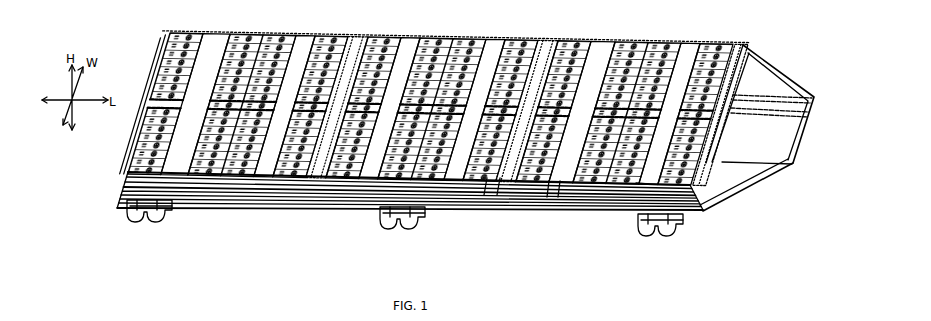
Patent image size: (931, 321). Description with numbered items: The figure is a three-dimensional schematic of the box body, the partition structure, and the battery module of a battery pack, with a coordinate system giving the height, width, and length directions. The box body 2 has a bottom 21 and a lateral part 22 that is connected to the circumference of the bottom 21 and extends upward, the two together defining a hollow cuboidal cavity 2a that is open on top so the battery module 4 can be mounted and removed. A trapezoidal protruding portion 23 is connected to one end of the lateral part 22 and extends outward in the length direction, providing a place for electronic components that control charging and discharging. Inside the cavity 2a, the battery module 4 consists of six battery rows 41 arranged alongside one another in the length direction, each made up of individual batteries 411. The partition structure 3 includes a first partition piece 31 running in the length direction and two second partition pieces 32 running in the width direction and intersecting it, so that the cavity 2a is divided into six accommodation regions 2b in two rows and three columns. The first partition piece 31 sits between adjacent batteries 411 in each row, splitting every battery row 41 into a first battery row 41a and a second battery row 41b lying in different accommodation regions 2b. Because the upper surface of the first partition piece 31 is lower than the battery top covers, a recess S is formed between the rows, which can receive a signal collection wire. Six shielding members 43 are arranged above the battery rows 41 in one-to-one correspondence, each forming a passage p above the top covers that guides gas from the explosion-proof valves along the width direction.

The battery row 41 is at (230, 93).
The first battery row 41a is at (172, 66).
The second battery row 41b is at (140, 148).
The shielding member 43 is at (222, 31).
The second partition piece 32 is at (357, 31).
The recess S is at (431, 95).
The partition structure 3 is at (567, 114).
The first partition piece 31 is at (723, 117).
The protruding portion 23 is at (733, 204).
The passage p is at (642, 183).
The box body 2 is at (410, 208).
The cavity 2a is at (486, 194).
The accommodation region 2b is at (548, 196).
The lateral part 22 is at (341, 207).
The battery module 4 is at (440, 210).
The battery 411 is at (233, 186).
The bottom 21 is at (203, 212).